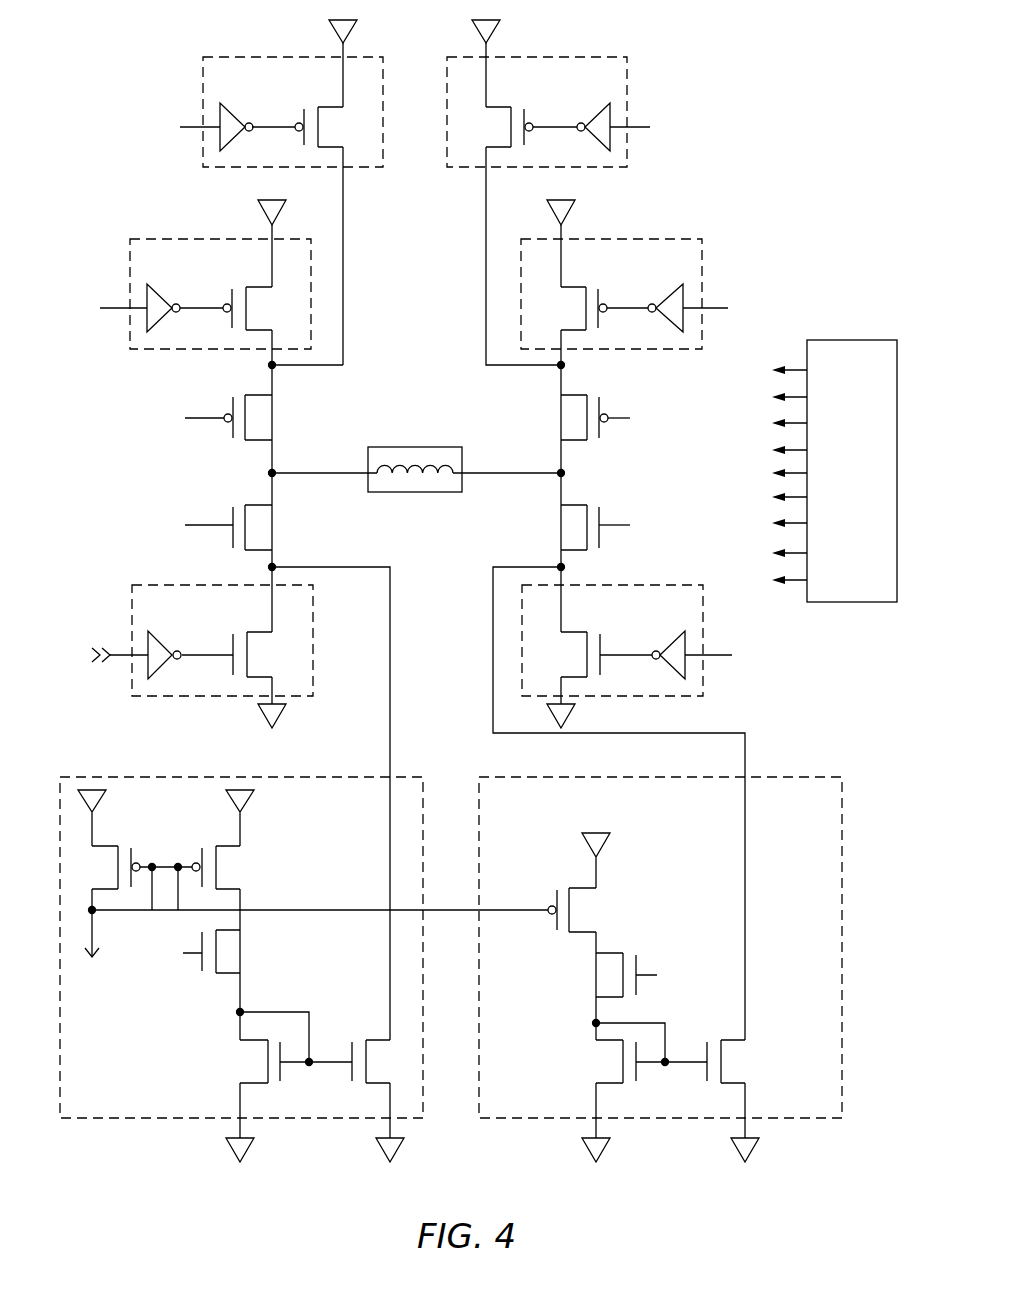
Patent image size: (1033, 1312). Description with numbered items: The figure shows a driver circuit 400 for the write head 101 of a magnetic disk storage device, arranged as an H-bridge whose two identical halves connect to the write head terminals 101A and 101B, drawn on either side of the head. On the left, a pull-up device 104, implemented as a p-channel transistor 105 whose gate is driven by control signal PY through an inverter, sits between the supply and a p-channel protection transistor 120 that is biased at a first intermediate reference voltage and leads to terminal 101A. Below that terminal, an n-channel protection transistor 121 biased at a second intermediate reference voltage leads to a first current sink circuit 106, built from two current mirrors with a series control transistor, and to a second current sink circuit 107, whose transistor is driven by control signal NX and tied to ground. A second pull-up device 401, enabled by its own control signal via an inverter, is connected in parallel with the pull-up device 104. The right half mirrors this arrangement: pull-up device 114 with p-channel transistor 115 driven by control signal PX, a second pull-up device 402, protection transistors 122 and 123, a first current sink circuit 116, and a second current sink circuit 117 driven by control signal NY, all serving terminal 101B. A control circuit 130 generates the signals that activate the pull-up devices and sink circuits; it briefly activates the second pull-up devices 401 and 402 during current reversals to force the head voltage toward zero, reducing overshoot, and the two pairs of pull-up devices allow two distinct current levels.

The driver circuit 400 is at (810, 42).
The second pull-up device 401 is at (231, 56).
The second pull-up device 402 is at (597, 56).
The pull-up device 104 is at (158, 238).
The p-channel transistor 105 is at (256, 286).
The pull-up device 114 is at (672, 238).
The p-channel transistor 115 is at (578, 286).
The p-channel protection transistor 120 is at (254, 393).
The n-channel protection transistor 121 is at (254, 503).
The p-channel protection transistor 122 is at (578, 393).
The n-channel protection transistor 123 is at (578, 503).
The write head 101 is at (433, 492).
The write head terminal 101A is at (336, 468).
The write head terminal 101B is at (532, 468).
The second current sink circuit 107 is at (158, 697).
The second current sink circuit 117 is at (674, 697).
The control circuit 130 is at (835, 603).
The first current sink circuit 106 is at (120, 1118).
The first current sink circuit 116 is at (780, 1118).